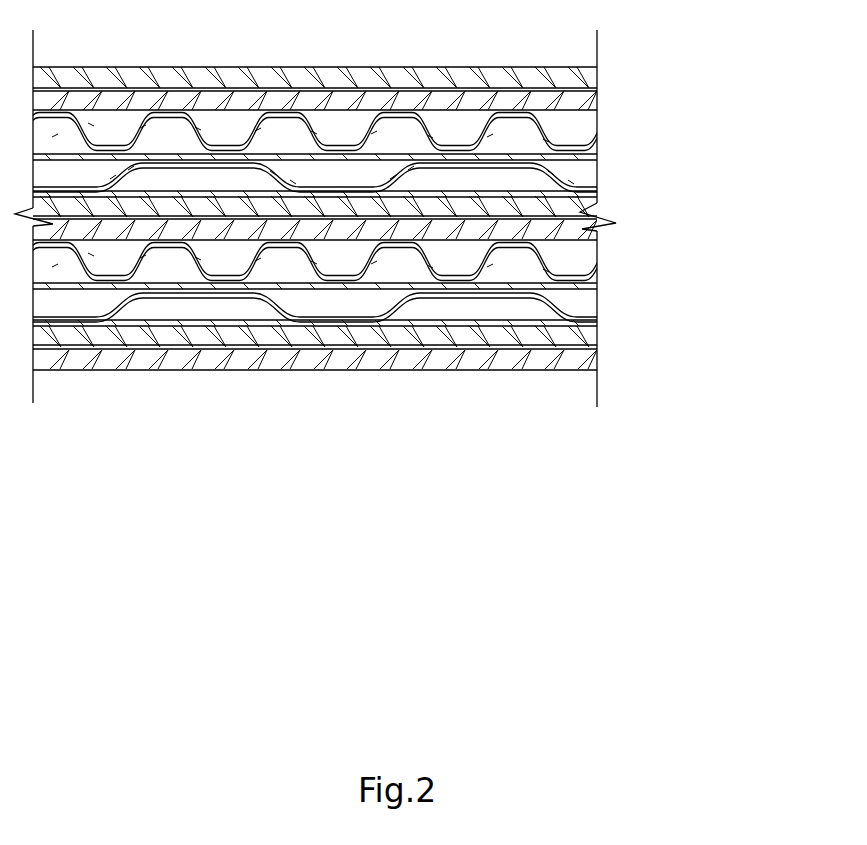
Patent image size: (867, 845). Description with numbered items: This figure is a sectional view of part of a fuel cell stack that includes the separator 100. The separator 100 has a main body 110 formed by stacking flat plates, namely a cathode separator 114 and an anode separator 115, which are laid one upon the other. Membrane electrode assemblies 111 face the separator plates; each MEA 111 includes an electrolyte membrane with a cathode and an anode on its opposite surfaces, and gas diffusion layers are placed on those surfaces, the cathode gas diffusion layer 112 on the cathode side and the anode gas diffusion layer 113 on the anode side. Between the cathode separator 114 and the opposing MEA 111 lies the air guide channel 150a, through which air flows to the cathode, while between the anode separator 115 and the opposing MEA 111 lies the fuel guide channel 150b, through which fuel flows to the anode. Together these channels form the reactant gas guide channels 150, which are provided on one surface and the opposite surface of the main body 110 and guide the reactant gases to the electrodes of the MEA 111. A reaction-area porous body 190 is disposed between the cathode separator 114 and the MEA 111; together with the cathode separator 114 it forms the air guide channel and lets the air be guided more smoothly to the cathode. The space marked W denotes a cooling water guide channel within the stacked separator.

The separator 100 is at (390, 207).
The main body 110 is at (672, 157).
The membrane electrode assembly 111 is at (580, 236).
The cathode gas diffusion layer 112 is at (597, 253).
The anode gas diffusion layer 113 is at (578, 202).
The cathode separator 114 is at (597, 161).
The anode separator 115 is at (597, 183).
The reactant gas guide channels 150 is at (334, 102).
The air guide channel 150a is at (112, 133).
The fuel guide channel 150b is at (510, 182).
The reaction-area porous body 190 is at (440, 124).
The cooling water guide channel W is at (344, 176).